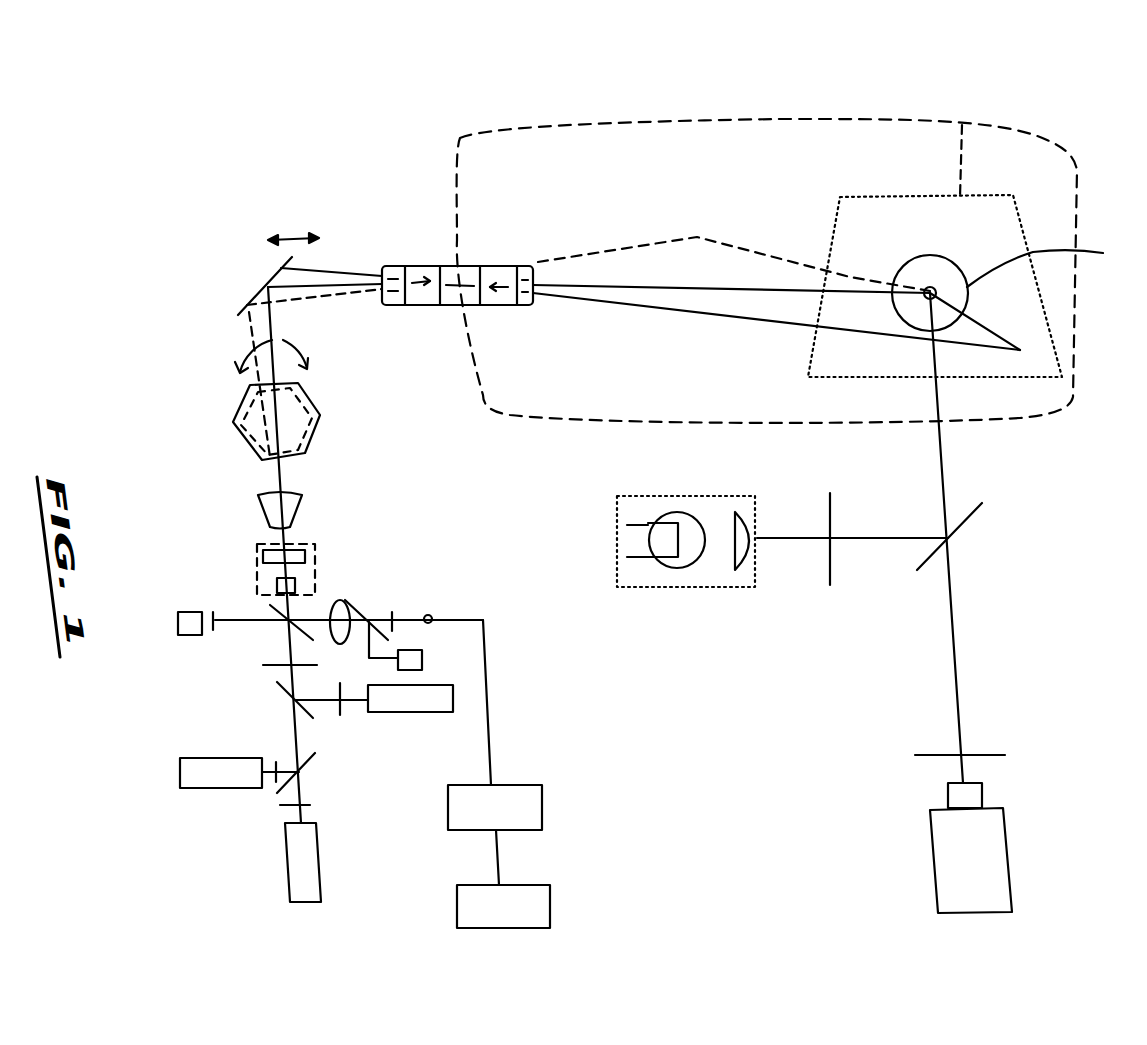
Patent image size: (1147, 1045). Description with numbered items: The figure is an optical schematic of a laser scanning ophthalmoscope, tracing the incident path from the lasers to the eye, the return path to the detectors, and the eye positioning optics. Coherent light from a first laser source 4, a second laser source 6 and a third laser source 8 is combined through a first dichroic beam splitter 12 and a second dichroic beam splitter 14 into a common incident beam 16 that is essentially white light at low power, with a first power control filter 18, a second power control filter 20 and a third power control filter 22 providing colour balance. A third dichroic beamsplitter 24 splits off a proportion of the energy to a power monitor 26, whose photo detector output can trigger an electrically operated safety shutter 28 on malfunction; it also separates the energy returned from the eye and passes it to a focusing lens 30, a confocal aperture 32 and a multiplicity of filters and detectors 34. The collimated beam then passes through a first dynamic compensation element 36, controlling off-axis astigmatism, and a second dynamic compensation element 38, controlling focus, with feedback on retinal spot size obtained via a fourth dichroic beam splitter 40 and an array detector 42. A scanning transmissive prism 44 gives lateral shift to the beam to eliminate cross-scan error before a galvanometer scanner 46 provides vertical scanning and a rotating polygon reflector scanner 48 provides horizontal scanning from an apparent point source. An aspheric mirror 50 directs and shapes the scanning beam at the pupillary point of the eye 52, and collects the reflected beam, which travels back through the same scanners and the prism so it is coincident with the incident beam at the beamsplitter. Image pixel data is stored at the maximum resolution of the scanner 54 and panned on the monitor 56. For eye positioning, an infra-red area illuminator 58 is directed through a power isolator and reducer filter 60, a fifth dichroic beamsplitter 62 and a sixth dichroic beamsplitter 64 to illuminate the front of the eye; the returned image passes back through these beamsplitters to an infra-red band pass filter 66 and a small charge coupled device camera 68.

The first laser source 4 is at (221, 754).
The second laser source 6 is at (286, 866).
The third laser source 8 is at (408, 713).
The first dichroic beam splitter 12 is at (312, 764).
The second dichroic beam splitter 14 is at (285, 700).
The incident beam 16 is at (287, 678).
The first power control filter 18 is at (312, 807).
The second power control filter 20 is at (278, 765).
The third power control filter 22 is at (345, 714).
The third dichroic beamsplitter 24 is at (288, 613).
The power monitor 26 is at (176, 625).
The safety shutter 28 is at (277, 665).
The focusing lens 30 is at (331, 603).
The confocal aperture 32 is at (394, 612).
The filters and detectors 34 is at (431, 613).
The first dynamic compensation element 36 is at (258, 572).
The second dynamic compensation element 38 is at (258, 512).
The fourth dichroic beam splitter 40 is at (362, 602).
The array detector 42 is at (422, 658).
The scanning transmissive prism 44 is at (237, 432).
The galvanometer scanner 46 is at (260, 287).
The rotating polygon reflector scanner 48 is at (412, 265).
The aspheric mirror 50 is at (1062, 162).
The eye 52 is at (1014, 286).
The scanner 54 is at (495, 807).
The monitor 56 is at (503, 906).
The infra-red area illuminator 58 is at (690, 590).
The power isolator and reducer filter 60 is at (833, 565).
The fifth dichroic beamsplitter 62 is at (965, 533).
The sixth dichroic beamsplitter 64 is at (962, 125).
The infra-red band pass filter 66 is at (990, 755).
The charge coupled device camera 68 is at (971, 848).